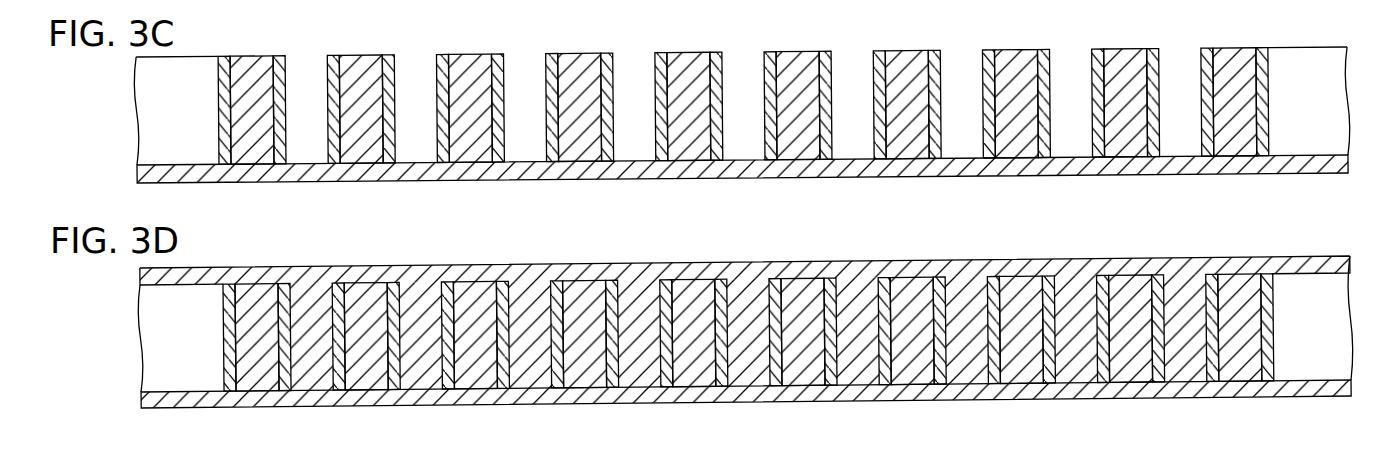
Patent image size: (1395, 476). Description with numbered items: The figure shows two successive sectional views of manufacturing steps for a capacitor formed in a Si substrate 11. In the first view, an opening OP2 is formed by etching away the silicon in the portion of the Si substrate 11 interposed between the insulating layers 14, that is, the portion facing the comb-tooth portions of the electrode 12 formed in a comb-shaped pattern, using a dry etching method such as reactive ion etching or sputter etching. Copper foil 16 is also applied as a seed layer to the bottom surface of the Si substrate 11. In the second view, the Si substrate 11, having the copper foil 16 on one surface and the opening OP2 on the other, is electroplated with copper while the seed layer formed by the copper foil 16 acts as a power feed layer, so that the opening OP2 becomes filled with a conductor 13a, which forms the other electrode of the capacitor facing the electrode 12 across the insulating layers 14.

In FIG. 3C, the Si substrate 11 is at (1325, 109).
In FIG. 3D, the Si substrate 11 is at (1328, 329).
In FIG. 3C, the electrode 12 is at (582, 62).
In FIG. 3D, the electrode 12 is at (466, 298).
In FIG. 3D, the conductor 13a is at (425, 290).
In FIG. 3C, the insulating layer 14 is at (610, 55).
In FIG. 3D, the insulating layer 14 is at (748, 332).
In FIG. 3C, the copper foil 16 is at (787, 168).
In FIG. 3D, the copper foil 16 is at (788, 394).
In FIG. 3C, the opening OP2 is at (636, 86).